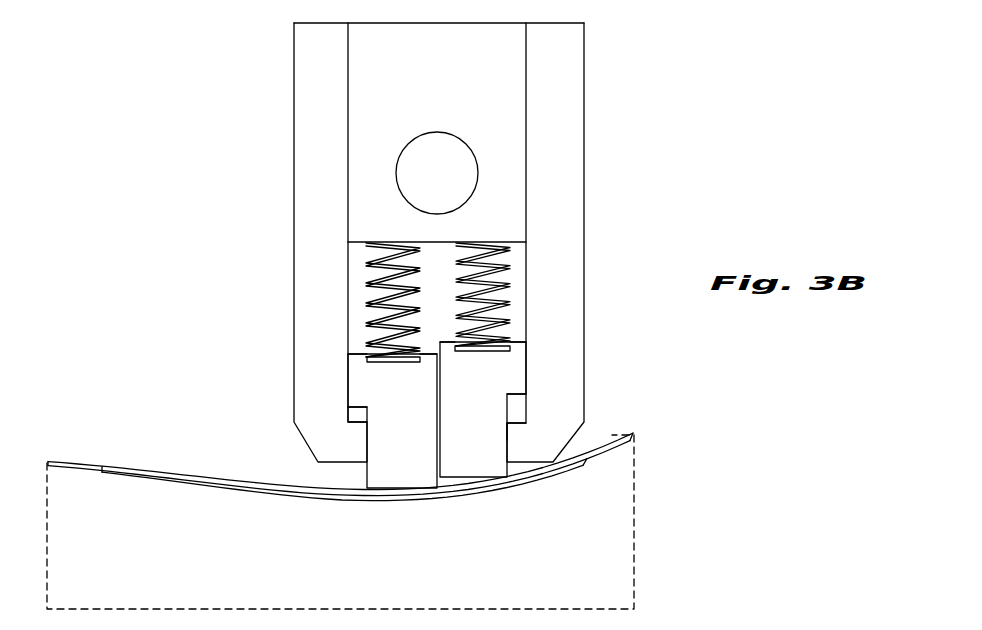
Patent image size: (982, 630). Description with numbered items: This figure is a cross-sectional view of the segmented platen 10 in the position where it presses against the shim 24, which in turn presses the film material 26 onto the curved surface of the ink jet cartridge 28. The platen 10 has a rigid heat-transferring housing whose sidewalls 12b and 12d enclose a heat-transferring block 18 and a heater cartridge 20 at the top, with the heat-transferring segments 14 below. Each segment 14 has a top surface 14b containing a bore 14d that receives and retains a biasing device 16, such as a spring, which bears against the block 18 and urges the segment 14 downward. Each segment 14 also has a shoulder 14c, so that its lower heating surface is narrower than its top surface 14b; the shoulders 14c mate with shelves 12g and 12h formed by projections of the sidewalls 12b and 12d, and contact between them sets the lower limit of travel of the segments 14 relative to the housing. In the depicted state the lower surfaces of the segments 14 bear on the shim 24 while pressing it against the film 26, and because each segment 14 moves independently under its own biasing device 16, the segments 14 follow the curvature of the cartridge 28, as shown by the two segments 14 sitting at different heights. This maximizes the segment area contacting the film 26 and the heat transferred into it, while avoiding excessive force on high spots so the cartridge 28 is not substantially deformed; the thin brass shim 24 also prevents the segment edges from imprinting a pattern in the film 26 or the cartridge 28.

The segmented platen 10 is at (181, 78).
The sidewall 12b is at (584, 181).
The sidewall 12d is at (294, 172).
The shelf 12g is at (512, 425).
The shelf 12h is at (357, 426).
The heat-transferring segment 14 is at (414, 441).
The top surface 14b is at (365, 357).
The shoulder 14c is at (352, 409).
The bore 14d is at (368, 362).
The biasing device 16 is at (365, 276).
The heat-transferring block 18 is at (450, 91).
The heater cartridge 20 is at (449, 184).
The shim 24 is at (135, 474).
The film material 26 is at (66, 463).
The ink jet cartridge 28 is at (357, 563).